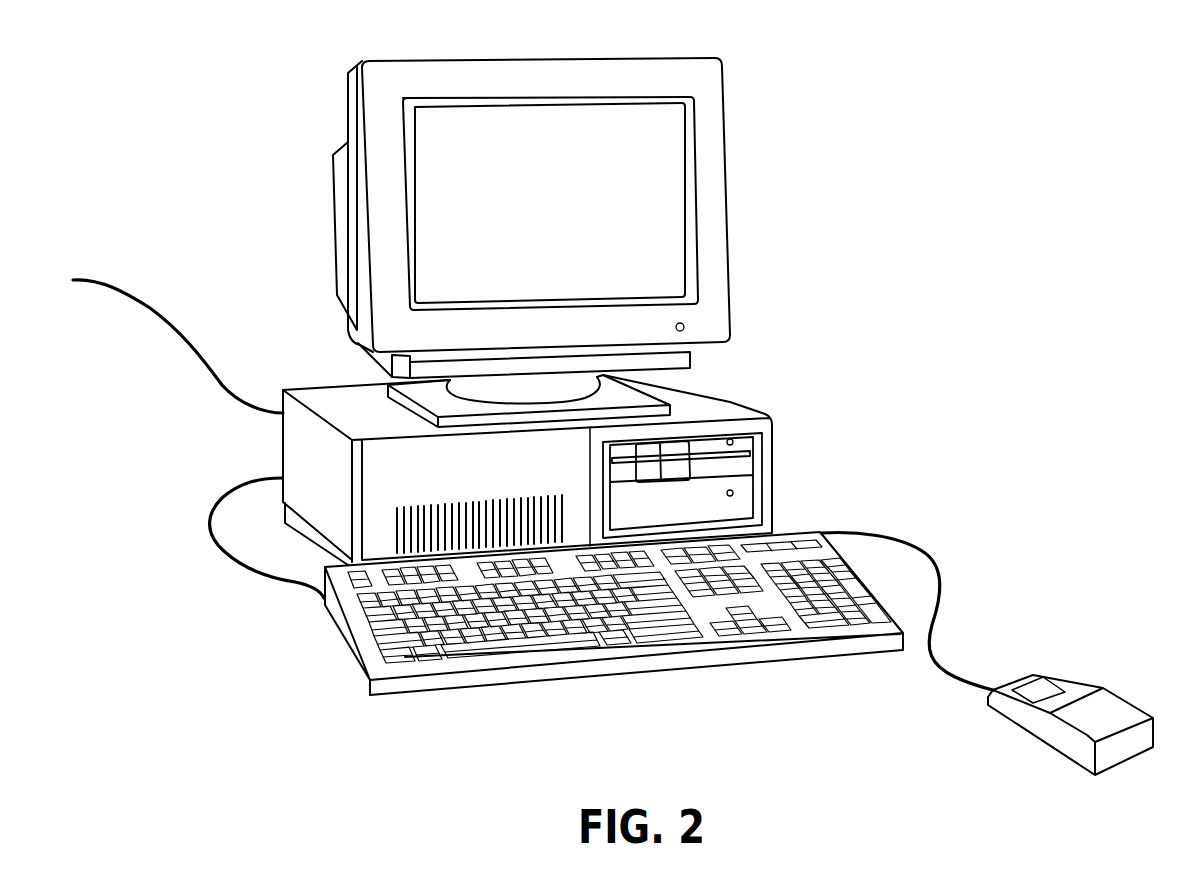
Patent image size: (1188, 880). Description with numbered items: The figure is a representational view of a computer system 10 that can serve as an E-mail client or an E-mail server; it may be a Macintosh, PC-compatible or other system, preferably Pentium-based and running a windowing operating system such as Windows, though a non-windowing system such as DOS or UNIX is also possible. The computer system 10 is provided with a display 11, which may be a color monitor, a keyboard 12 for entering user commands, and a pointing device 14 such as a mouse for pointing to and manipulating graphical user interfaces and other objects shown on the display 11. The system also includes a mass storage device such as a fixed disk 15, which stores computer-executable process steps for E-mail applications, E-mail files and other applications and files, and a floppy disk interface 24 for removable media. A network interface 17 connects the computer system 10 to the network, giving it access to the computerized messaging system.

The computer system 10 is at (786, 160).
The display 11 is at (568, 130).
The keyboard 12 is at (500, 662).
The pointing device 14 is at (1123, 762).
The fixed disk 15 is at (743, 502).
The network interface 17 is at (140, 298).
The floppy disk interface 24 is at (723, 472).